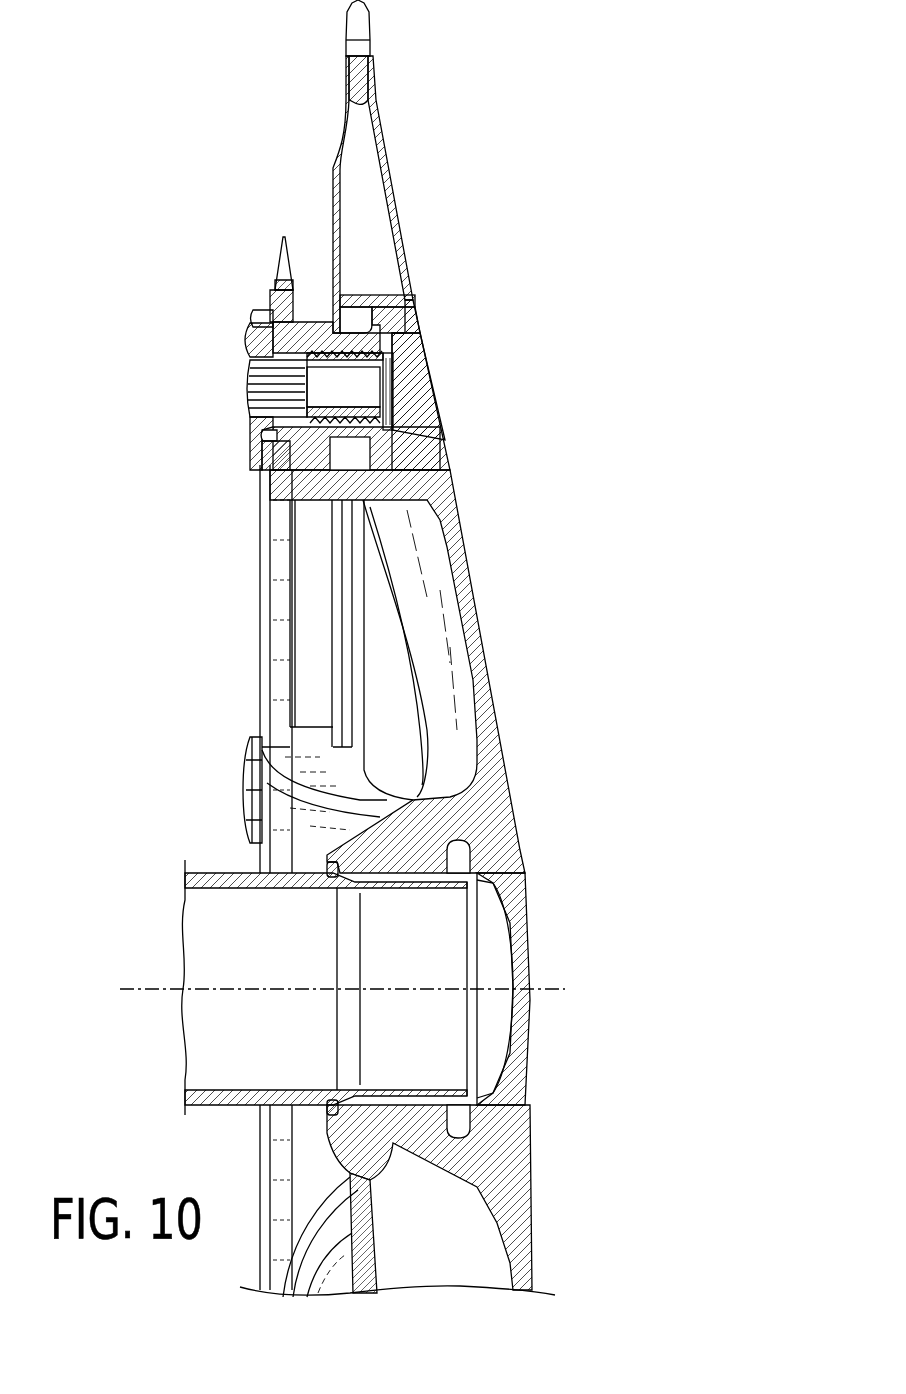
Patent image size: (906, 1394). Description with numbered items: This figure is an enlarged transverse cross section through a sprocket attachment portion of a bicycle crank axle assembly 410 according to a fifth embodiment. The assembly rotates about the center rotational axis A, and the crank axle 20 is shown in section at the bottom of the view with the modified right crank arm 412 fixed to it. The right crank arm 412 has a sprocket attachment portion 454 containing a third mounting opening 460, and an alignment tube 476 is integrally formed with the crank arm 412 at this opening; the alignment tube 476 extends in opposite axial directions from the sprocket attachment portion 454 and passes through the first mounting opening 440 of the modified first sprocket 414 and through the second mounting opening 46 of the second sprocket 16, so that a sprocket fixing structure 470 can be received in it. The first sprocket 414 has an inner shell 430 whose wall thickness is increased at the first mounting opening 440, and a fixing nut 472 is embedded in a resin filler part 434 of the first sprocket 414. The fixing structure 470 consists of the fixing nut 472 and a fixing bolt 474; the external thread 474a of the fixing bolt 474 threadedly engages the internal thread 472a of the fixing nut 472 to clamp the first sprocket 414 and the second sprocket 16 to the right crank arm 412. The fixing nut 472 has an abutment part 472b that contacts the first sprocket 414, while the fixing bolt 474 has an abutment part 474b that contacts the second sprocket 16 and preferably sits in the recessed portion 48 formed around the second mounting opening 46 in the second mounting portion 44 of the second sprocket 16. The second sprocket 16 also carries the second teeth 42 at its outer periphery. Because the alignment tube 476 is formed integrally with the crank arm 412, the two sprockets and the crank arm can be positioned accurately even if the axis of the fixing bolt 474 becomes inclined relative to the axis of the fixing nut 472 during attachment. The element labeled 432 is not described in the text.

The bicycle crank axle assembly 410 is at (124, 236).
The inner shell 430 is at (332, 167).
The sleeve 432 is at (392, 162).
The first sprocket 414 is at (394, 204).
The right crank arm 412 is at (472, 597).
The filler part 434 is at (408, 312).
The abutment part 472b is at (358, 300).
The external thread 474a is at (400, 340).
The abutment part 474b is at (246, 350).
The fixing bolt 474 is at (245, 375).
The third mounting opening 460 is at (300, 395).
The internal thread 472a is at (388, 378).
The first mounting opening 440 is at (386, 415).
The fixing nut 472 is at (440, 452).
The sprocket attachment portion 454 is at (305, 490).
The second sprocket 16 is at (258, 640).
The second teeth 42 is at (283, 250).
The alignment tube 476 is at (272, 272).
The recessed portion 48 is at (262, 314).
The sprocket fixing structure 470 is at (186, 437).
The second mounting opening 46 is at (266, 434).
The second mounting portion 44 is at (290, 460).
The crank axle 20 is at (205, 868).
The center rotational axis A is at (146, 986).